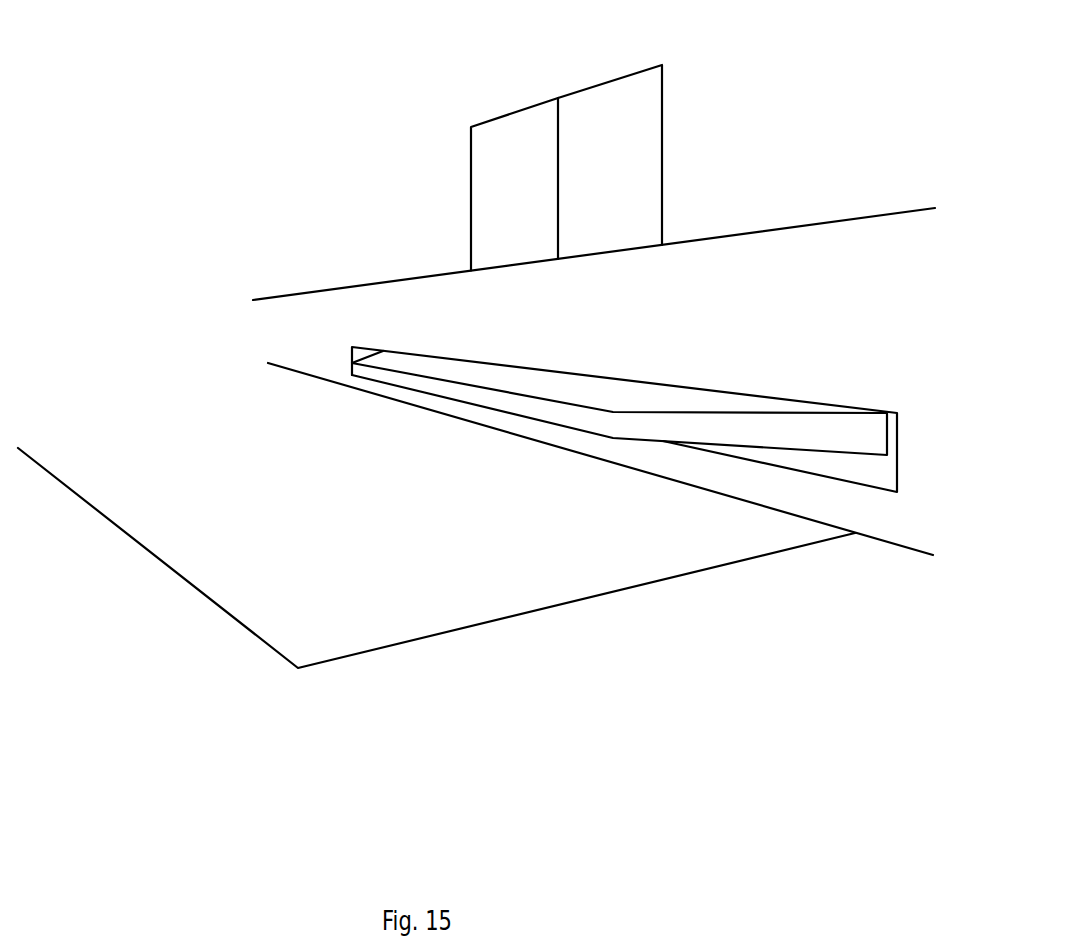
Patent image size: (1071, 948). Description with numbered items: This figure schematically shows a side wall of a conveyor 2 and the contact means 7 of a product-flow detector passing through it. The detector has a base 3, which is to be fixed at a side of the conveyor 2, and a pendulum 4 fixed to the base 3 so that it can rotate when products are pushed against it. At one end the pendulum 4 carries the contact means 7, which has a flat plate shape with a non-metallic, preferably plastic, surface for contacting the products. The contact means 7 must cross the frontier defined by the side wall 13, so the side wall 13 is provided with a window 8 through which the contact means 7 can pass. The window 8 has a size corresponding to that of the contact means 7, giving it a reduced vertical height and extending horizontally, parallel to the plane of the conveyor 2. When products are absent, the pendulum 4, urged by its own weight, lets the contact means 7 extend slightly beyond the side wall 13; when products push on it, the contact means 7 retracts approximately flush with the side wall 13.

The conveyor 2 is at (662, 678).
The base 3 is at (501, 143).
The pendulum 4 is at (630, 135).
The contact means 7 is at (400, 415).
The window 8 is at (882, 501).
The side wall 13 is at (831, 510).